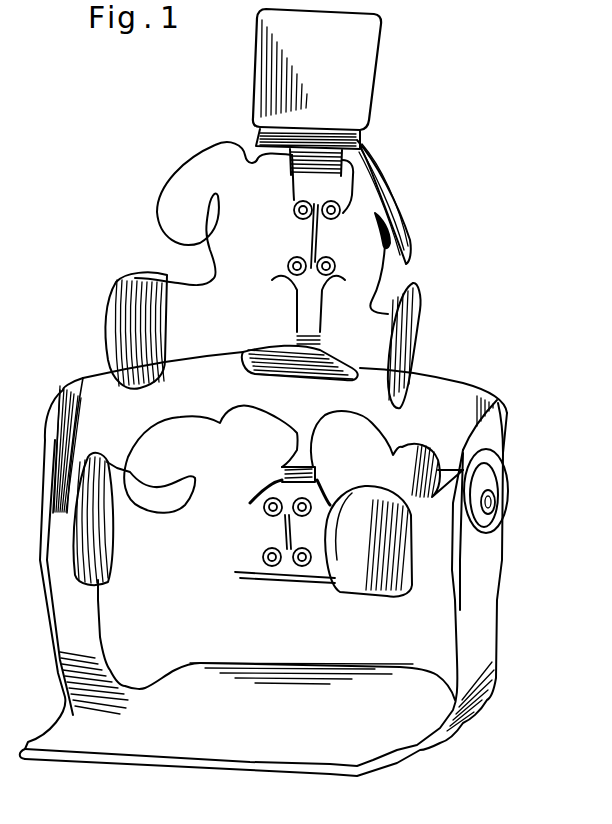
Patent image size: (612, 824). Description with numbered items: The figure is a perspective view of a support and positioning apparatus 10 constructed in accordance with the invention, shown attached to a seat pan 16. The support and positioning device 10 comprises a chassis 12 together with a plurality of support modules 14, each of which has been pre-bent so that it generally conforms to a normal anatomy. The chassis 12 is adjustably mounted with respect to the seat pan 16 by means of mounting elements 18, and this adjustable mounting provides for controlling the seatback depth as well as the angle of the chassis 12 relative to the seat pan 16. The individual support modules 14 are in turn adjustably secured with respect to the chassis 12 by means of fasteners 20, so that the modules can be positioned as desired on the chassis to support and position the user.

The support and positioning apparatus 10 is at (475, 266).
The chassis 12 is at (373, 108).
The support modules 14 is at (165, 180).
The seat pan 16 is at (485, 591).
The mounting elements 18 is at (492, 500).
The fasteners 20 is at (290, 216).